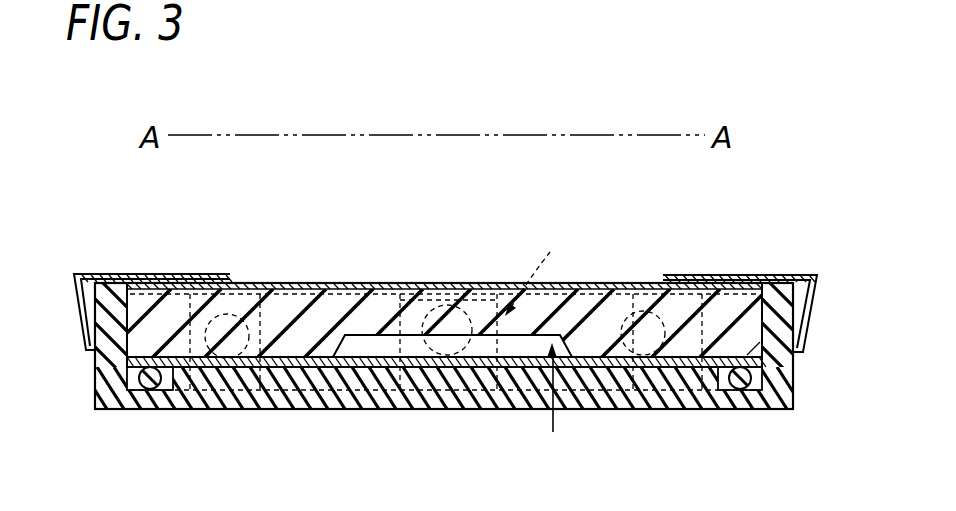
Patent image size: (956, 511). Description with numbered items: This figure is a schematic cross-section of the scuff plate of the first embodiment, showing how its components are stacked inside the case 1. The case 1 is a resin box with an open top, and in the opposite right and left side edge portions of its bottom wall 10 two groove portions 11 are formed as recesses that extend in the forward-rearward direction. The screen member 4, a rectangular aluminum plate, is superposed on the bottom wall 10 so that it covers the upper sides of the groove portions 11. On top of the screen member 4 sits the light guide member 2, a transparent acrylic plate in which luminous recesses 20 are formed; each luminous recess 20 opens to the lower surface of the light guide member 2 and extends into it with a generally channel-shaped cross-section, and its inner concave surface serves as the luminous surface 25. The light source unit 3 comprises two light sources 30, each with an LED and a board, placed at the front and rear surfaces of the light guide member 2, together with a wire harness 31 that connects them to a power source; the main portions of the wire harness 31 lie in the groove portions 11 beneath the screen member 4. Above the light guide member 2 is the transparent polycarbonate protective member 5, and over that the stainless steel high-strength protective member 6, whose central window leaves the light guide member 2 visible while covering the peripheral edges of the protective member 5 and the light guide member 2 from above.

The case 1 is at (282, 410).
The light guide member 2 is at (354, 290).
The light source unit 3 is at (537, 273).
The screen member 4 is at (250, 318).
The protective member 5 is at (603, 290).
The high-strength protective member 6 is at (148, 275).
The bottom wall 10 is at (630, 410).
The groove portions 11 is at (140, 373).
The luminous recess 20 is at (553, 404).
The luminous surface 25 is at (366, 335).
The light sources 30 is at (470, 300).
The wire harness 31 is at (255, 292).